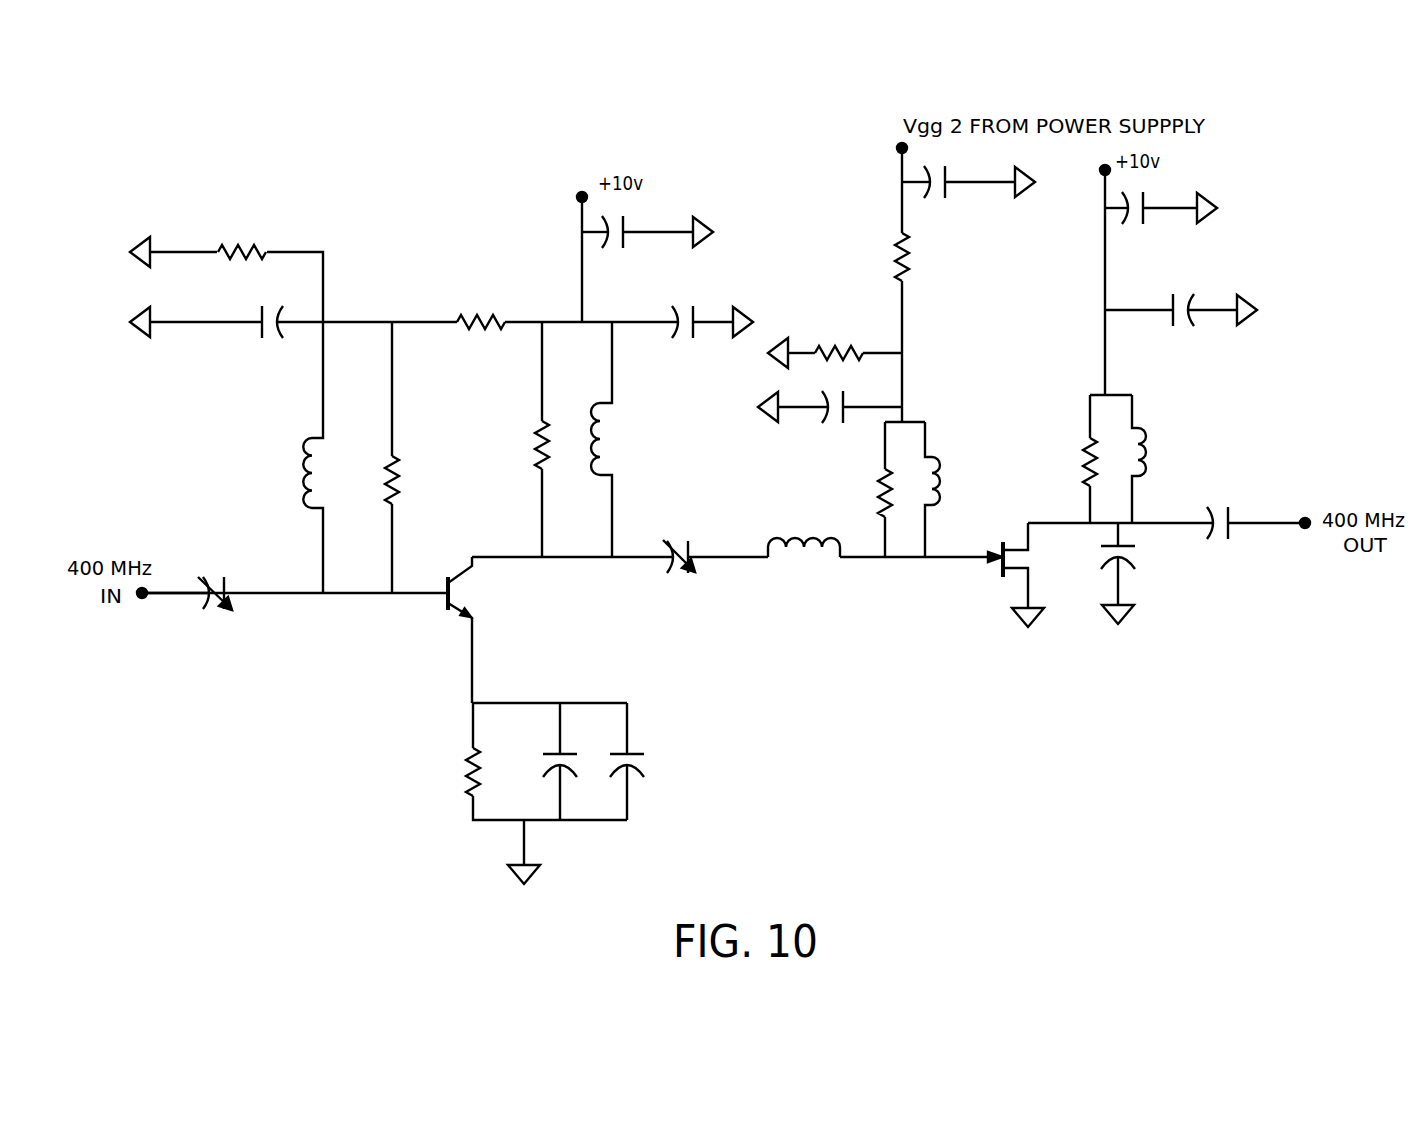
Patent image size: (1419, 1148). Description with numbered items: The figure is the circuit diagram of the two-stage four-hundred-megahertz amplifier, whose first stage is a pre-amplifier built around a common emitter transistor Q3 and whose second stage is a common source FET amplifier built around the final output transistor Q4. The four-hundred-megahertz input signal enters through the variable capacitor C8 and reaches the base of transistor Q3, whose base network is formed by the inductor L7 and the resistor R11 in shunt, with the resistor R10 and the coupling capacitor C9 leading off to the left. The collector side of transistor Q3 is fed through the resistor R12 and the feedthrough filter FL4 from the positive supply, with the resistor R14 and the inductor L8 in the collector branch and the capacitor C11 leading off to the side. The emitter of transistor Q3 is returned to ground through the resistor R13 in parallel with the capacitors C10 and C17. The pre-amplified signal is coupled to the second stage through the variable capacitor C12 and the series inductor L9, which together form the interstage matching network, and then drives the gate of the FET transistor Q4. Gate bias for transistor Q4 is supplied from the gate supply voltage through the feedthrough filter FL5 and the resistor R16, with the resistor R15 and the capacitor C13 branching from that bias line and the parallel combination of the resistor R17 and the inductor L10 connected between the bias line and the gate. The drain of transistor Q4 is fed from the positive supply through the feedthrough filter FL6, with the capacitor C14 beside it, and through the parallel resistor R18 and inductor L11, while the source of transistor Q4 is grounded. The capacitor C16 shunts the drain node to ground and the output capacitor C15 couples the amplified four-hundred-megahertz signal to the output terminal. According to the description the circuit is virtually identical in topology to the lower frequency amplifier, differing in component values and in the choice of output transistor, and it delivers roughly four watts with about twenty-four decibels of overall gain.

The resistor R10 is at (236, 283).
The capacitor C9 is at (270, 337).
The inductor L7 is at (295, 457).
The resistor R11 is at (370, 457).
The resistor R12 is at (481, 338).
The resistor R14 is at (520, 439).
The feedthrough filter FL4 is at (626, 257).
The inductor L8 is at (615, 439).
The capacitor C11 is at (699, 339).
The variable capacitor C8 is at (187, 610).
The transistor Q3 is at (474, 630).
The resistor R13 is at (523, 793).
The capacitor C10 is at (538, 761).
The capacitor C17 is at (651, 761).
The variable capacitor C12 is at (681, 574).
The inductor L9 is at (804, 563).
The resistor R15 is at (835, 342).
The capacitor C13 is at (830, 422).
The feedthrough filter FL5 is at (944, 184).
The resistor R16 is at (882, 327).
The resistor R17 is at (876, 489).
The inductor L10 is at (956, 489).
The FET transistor Q4 is at (1025, 575).
The feedthrough filter FL6 is at (1137, 280).
The capacitor C14 is at (1181, 325).
The resistor R18 is at (1081, 459).
The inductor L11 is at (1159, 459).
The capacitor C15 is at (1216, 537).
The capacitor C16 is at (1139, 573).